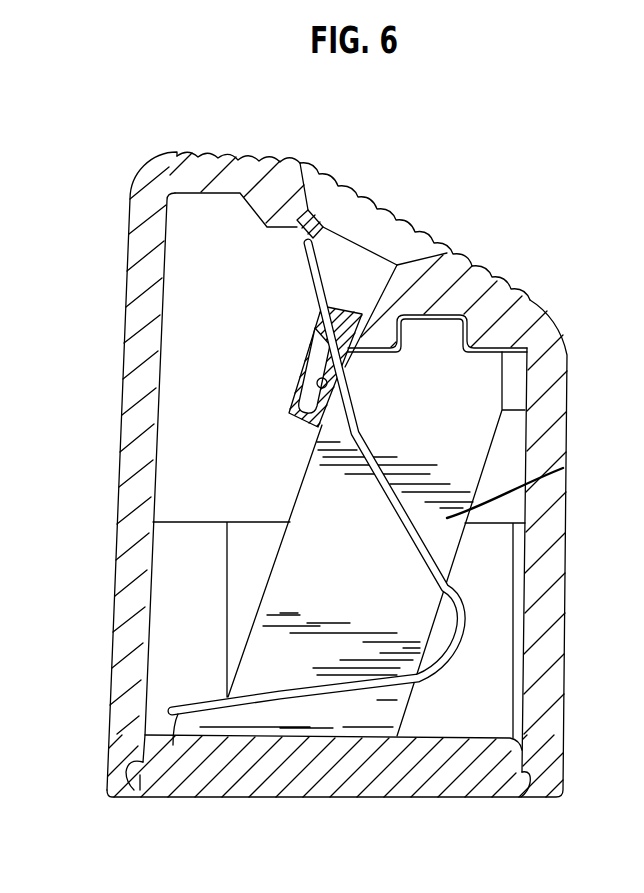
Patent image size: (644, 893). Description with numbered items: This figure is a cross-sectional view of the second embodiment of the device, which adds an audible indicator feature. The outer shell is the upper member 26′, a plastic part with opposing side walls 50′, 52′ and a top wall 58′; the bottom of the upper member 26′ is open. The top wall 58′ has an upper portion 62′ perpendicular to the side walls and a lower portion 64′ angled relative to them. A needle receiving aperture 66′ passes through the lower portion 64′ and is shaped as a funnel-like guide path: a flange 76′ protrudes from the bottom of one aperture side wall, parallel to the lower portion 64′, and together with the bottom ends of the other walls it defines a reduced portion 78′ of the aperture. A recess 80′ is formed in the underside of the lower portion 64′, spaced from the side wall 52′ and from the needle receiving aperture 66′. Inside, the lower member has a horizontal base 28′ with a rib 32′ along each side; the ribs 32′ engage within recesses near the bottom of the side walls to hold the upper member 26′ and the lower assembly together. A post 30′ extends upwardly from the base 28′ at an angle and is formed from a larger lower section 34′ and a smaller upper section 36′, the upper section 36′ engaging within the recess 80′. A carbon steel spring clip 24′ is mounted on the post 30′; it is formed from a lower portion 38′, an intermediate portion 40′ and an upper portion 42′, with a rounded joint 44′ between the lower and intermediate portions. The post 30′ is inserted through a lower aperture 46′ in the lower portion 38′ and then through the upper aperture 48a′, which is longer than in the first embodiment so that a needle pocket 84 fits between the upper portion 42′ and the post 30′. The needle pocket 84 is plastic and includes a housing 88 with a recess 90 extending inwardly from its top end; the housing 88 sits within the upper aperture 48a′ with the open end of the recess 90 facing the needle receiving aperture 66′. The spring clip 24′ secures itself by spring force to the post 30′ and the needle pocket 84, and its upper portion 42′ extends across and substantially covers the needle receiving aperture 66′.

The upper member 26′ is at (173, 152).
The upper portion of the top wall 62′ is at (211, 167).
The top wall 58′ is at (251, 157).
The flange 76′ is at (318, 226).
The reduced portion of the needle receiving aperture 78′ is at (334, 305).
The housing 88 is at (397, 265).
The needle receiving aperture 66′ is at (417, 285).
The lower portion of the top wall 64′ is at (473, 280).
The upper section of the post 36′ is at (470, 340).
The recess 80′ is at (458, 342).
The recess 90 is at (330, 383).
The upper portion of the spring clip 42′ is at (312, 264).
The upper aperture 48a′ is at (323, 304).
The needle pocket 84 is at (294, 388).
The side wall 50′ is at (126, 433).
The post 30′ is at (480, 442).
The lower section of the post 34′ is at (563, 468).
The intermediate portion of the spring clip 40′ is at (430, 563).
The joint 44′ is at (463, 643).
The side wall 52′ is at (552, 670).
The spring clip 24′ is at (443, 672).
The rib 32′ is at (130, 763).
The lower portion of the spring clip 38′ is at (173, 745).
The lower aperture 46′ is at (250, 705).
The base 28′ is at (468, 790).